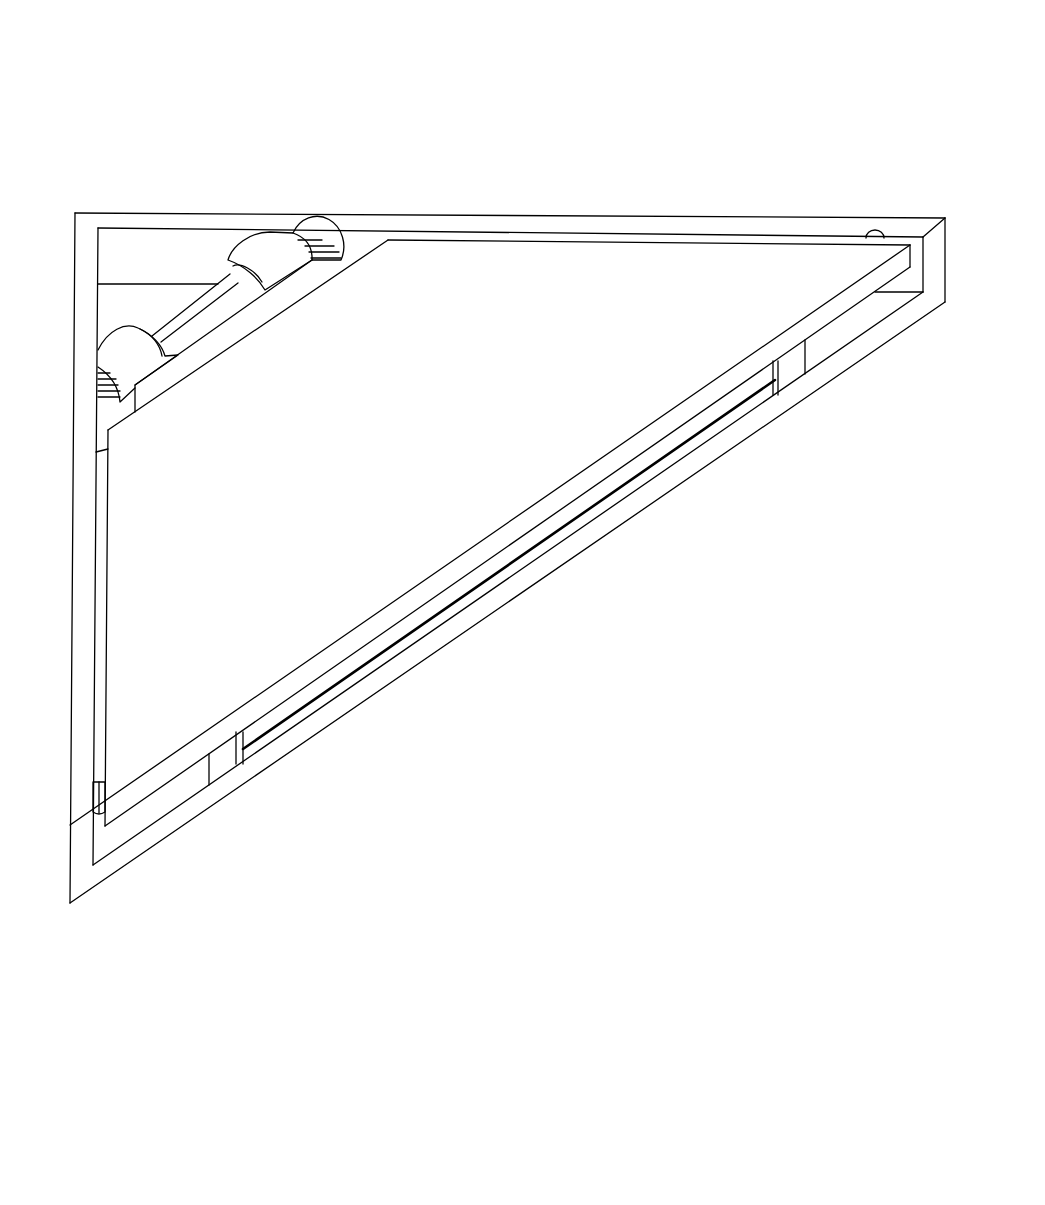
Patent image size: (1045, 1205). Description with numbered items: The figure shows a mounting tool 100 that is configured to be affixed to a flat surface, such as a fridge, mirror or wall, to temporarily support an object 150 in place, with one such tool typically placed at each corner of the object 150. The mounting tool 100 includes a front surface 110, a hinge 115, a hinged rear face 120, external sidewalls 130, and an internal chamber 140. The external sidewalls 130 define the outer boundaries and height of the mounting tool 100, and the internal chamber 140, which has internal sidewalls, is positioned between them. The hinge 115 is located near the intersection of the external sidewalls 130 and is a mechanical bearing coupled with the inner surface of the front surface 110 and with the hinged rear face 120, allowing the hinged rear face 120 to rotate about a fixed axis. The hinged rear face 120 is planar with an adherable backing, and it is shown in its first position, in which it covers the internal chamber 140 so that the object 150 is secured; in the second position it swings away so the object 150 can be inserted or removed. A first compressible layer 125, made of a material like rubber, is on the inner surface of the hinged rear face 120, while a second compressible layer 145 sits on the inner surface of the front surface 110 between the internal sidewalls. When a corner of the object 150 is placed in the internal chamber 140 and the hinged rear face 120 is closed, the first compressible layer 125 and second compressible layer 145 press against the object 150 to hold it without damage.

The mounting tool 100 is at (104, 154).
The front surface 110 is at (137, 848).
The hinge 115 is at (285, 246).
The hinged rear face 120 is at (520, 290).
The first compressible layer 125 is at (697, 433).
The external sidewalls 130 is at (808, 222).
The internal chamber 140 is at (243, 743).
The second compressible layer 145 is at (455, 640).
The object 150 is at (585, 538).